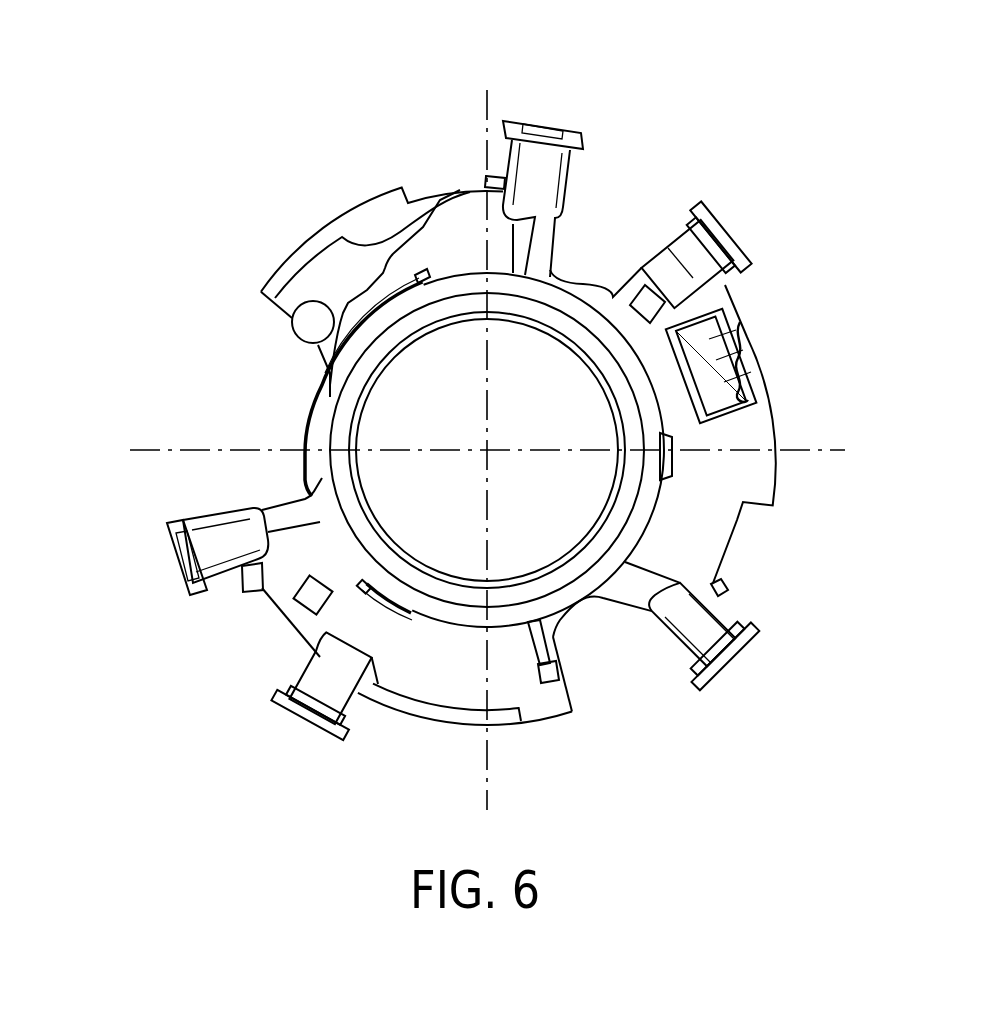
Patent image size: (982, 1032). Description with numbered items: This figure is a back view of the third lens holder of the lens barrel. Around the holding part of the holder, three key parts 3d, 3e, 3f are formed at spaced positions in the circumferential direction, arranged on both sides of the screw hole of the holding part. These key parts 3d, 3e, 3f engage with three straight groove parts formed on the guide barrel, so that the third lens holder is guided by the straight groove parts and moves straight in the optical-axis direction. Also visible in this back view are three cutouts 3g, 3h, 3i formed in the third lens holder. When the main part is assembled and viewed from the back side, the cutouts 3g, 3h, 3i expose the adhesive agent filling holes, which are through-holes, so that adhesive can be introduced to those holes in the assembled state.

The key part 3d is at (500, 121).
The cutout 3g is at (582, 273).
The cutout 3h is at (295, 467).
The key part 3e is at (203, 595).
The key part 3f is at (755, 618).
The cutout 3i is at (580, 622).